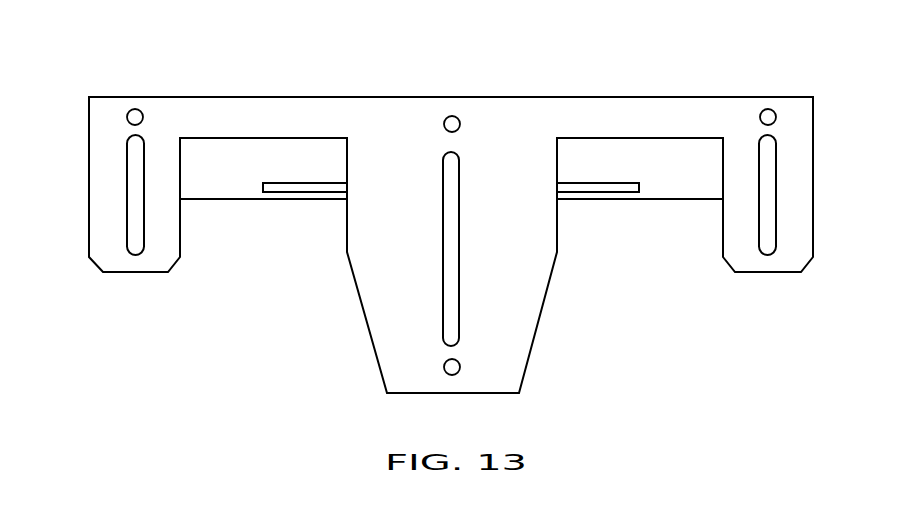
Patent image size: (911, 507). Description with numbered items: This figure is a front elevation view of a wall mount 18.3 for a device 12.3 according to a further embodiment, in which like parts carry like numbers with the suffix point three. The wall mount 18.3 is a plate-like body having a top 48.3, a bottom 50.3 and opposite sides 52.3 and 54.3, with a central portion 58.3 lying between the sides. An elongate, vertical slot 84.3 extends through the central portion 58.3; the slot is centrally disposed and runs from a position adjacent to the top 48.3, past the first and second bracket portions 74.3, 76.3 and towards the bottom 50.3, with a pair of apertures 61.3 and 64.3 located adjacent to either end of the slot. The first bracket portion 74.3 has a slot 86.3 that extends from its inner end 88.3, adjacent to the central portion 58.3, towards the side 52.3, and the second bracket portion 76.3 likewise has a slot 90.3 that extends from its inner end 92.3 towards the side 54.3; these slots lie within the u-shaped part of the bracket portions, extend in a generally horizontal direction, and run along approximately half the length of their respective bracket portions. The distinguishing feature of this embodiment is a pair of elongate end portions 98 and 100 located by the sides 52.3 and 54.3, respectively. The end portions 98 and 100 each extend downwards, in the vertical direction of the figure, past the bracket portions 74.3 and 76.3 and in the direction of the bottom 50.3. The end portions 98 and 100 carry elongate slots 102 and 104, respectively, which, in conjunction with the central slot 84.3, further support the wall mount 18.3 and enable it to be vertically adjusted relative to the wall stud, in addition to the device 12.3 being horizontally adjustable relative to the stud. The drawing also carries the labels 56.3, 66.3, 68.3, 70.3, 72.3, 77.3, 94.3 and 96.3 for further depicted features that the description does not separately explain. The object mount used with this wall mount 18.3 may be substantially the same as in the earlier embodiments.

The device 12.3 is at (679, 52).
The wall mount 18.3 is at (745, 76).
The top 48.3 is at (295, 90).
The bottom 50.3 is at (385, 400).
The side 52.3 is at (89, 155).
The side 54.3 is at (813, 166).
The central portion 56.3 is at (478, 108).
The central portion 58.3 is at (413, 216).
The aperture 61.3 is at (451, 115).
The aperture 64.3 is at (460, 367).
The first opening 66.3 is at (248, 129).
The second opening 68.3 is at (715, 129).
The first mounting hole 70.3 is at (135, 108).
The second mounting hole 72.3 is at (769, 108).
The first bracket portion 74.3 is at (240, 212).
The second bracket portion 76.3 is at (640, 212).
The central region 77.3 is at (521, 132).
The slot 84.3 is at (459, 255).
The slot 86.3 is at (304, 193).
The inner end 88.3 is at (347, 163).
The slot 90.3 is at (586, 193).
The inner end 92.3 is at (557, 161).
The first tab edge 94.3 is at (263, 183).
The second tab edge 96.3 is at (639, 183).
The end portion 98 is at (100, 217).
The end portion 100 is at (795, 222).
The slot 102 is at (125, 237).
The slot 104 is at (777, 239).